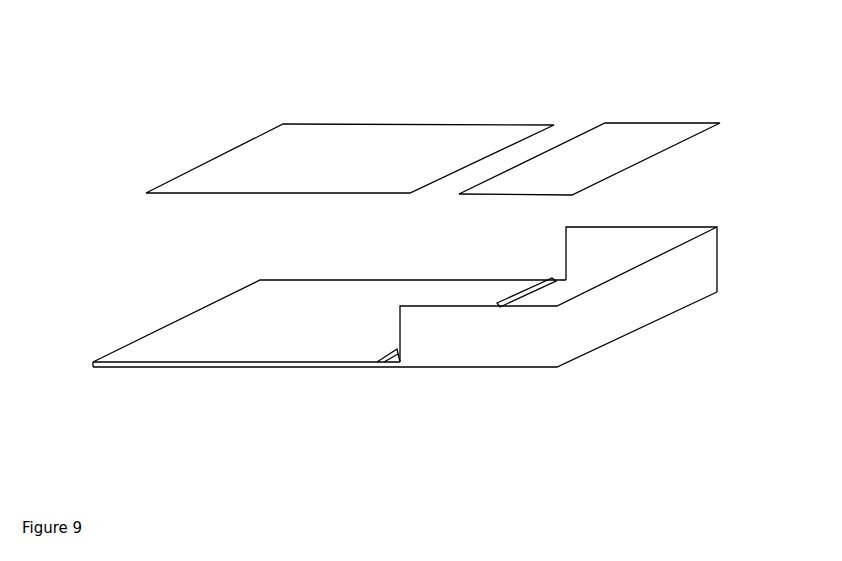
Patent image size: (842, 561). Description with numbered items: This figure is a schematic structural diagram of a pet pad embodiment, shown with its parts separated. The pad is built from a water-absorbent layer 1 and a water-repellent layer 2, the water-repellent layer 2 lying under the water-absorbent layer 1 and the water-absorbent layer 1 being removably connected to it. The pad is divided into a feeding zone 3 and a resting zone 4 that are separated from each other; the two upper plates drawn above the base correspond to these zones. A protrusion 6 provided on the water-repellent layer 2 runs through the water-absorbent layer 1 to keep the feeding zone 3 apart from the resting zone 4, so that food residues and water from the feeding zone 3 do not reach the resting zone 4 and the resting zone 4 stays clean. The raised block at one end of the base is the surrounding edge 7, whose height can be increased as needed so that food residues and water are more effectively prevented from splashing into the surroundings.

The water-absorbent layer 1 is at (268, 154).
The water-repellent layer 2 is at (233, 370).
The feeding zone 3 is at (627, 138).
The resting zone 4 is at (369, 142).
The protrusion 6 is at (543, 285).
The surrounding edge 7 is at (625, 293).